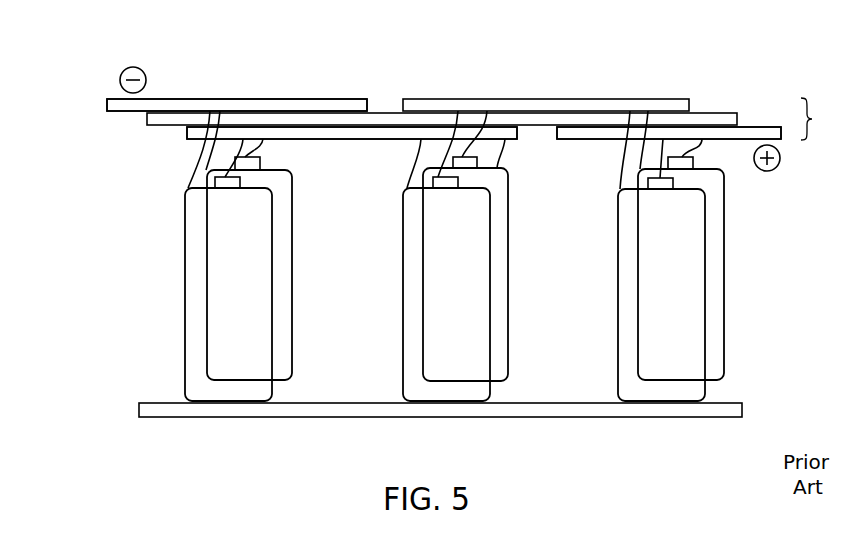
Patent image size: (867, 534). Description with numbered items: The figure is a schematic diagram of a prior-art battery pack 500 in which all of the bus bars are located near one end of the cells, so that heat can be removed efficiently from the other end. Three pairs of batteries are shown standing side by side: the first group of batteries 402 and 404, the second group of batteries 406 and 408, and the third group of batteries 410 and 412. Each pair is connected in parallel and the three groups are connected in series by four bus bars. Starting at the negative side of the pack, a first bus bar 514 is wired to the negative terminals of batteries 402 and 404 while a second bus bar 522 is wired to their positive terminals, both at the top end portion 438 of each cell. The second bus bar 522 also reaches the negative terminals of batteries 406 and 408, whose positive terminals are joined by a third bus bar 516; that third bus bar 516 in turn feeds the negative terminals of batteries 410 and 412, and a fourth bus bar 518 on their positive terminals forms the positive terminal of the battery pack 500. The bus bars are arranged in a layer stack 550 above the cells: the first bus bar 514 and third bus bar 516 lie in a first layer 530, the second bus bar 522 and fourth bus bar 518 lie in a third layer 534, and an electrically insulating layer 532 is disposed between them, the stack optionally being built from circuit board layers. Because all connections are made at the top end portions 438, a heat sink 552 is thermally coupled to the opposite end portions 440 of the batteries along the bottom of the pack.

The battery pack 500 is at (97, 84).
The first bus bar 514 is at (268, 98).
The third bus bar 516 is at (538, 98).
The fourth bus bar 518 is at (740, 140).
The second bus bar 522 is at (365, 141).
The first layer 530 is at (100, 104).
The electrically insulating layer 532 is at (140, 118).
The third layer 534 is at (180, 132).
The layer stack 550 is at (829, 119).
The heat sink 552 is at (332, 418).
The battery 402 is at (272, 310).
The battery 404 is at (292, 210).
The battery 406 is at (488, 271).
The battery 408 is at (508, 197).
The battery 410 is at (705, 283).
The battery 412 is at (724, 218).
The top end portion 438 is at (243, 228).
The opposite end portion 440 is at (242, 391).